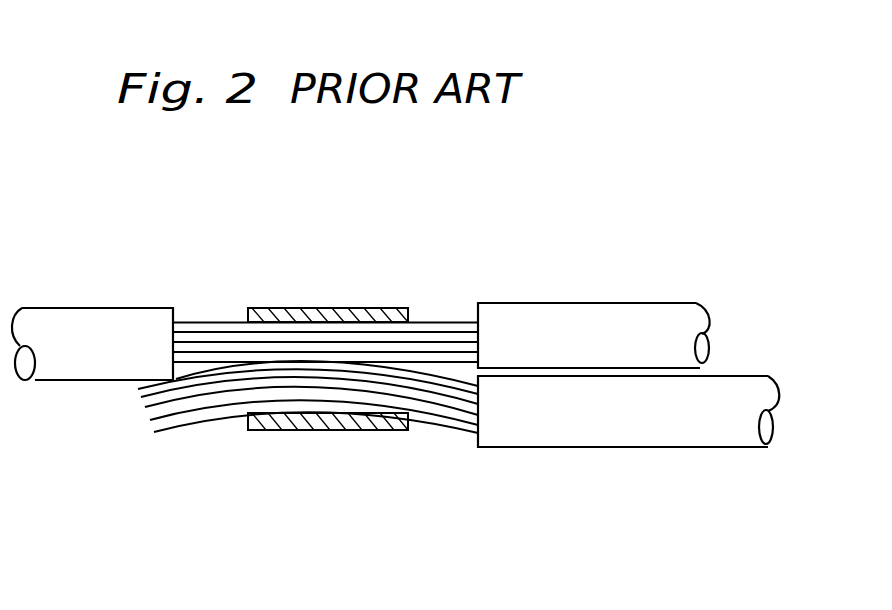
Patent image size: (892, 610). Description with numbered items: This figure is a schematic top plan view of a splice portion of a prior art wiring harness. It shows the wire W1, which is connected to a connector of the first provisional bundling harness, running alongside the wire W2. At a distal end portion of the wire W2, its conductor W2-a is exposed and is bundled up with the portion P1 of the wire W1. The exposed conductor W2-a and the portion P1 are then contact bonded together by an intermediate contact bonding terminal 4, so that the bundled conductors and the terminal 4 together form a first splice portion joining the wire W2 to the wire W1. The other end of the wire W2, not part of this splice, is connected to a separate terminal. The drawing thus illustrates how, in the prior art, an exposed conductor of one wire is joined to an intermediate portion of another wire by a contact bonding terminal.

The wire W1 is at (88, 313).
The intermediate contact bonding terminal 4 is at (335, 308).
The portion of the wire W1 P1 is at (441, 303).
The conductor W2-a is at (447, 400).
The wire W2 is at (615, 447).